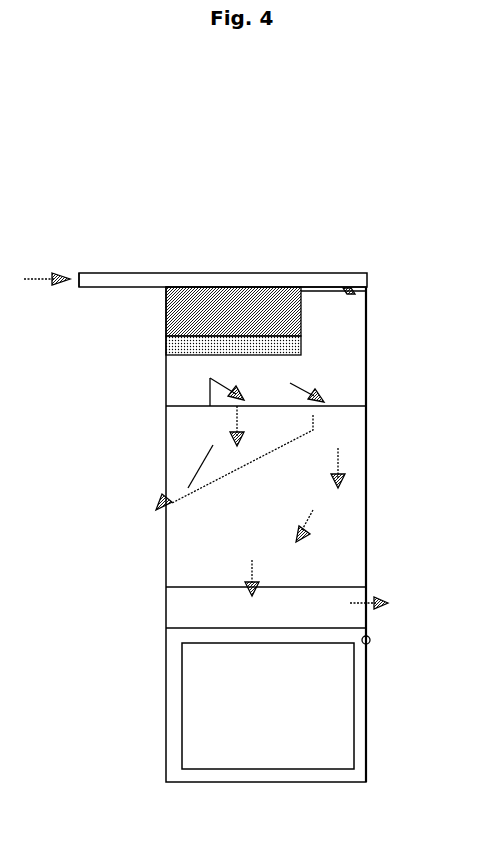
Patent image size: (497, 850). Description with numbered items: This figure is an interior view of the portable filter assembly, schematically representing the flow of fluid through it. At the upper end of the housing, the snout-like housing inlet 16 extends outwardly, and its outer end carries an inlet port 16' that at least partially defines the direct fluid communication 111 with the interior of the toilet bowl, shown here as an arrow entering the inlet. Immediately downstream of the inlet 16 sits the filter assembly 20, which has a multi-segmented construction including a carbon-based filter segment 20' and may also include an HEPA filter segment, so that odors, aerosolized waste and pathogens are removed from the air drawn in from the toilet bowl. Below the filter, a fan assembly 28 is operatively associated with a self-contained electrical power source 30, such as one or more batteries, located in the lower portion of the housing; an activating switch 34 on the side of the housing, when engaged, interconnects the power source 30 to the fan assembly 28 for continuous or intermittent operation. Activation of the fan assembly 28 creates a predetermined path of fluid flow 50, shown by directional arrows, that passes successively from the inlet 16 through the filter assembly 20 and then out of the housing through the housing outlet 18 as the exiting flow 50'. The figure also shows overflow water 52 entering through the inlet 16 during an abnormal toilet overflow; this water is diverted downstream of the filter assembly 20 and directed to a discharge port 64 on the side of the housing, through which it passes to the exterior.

The housing inlet 16 is at (223, 266).
The inlet port 16' is at (80, 262).
The direct fluid communication 111 is at (24, 279).
The housing outlet 18 is at (366, 587).
The filter assembly 20 is at (359, 306).
The carbon-based filter segment 20' is at (203, 311).
The fan assembly 28 is at (175, 617).
The self-contained electrical power source 30 is at (340, 721).
The activating switch 34 is at (371, 640).
The fluid flow 50 is at (310, 487).
The fluid flow exiting outlet 50' is at (381, 596).
The overflow water flow 52 is at (237, 423).
The discharge port 64 is at (170, 510).